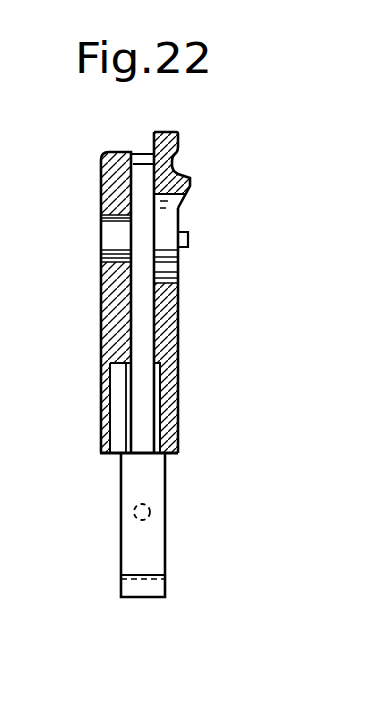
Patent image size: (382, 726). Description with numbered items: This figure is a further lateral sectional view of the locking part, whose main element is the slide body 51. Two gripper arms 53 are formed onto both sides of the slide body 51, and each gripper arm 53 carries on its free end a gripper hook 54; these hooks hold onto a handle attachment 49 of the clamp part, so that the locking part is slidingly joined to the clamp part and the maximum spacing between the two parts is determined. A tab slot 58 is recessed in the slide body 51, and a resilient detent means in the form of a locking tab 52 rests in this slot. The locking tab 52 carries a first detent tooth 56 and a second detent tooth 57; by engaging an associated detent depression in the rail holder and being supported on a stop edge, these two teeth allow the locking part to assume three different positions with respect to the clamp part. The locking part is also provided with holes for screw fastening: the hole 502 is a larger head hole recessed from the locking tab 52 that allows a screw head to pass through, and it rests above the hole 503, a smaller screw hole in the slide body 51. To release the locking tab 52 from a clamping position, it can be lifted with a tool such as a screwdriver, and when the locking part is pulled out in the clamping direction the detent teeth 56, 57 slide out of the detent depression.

The handle attachment 49 is at (122, 408).
The slide body 51 is at (120, 342).
The locking tab 52 is at (177, 316).
The gripper arm 53 is at (147, 480).
The gripper hook 54 is at (165, 577).
The first detent tooth 56 is at (190, 181).
The second detent tooth 57 is at (183, 242).
The tab slot 58 is at (142, 304).
The head hole 502 is at (163, 261).
The screw hole 503 is at (122, 227).